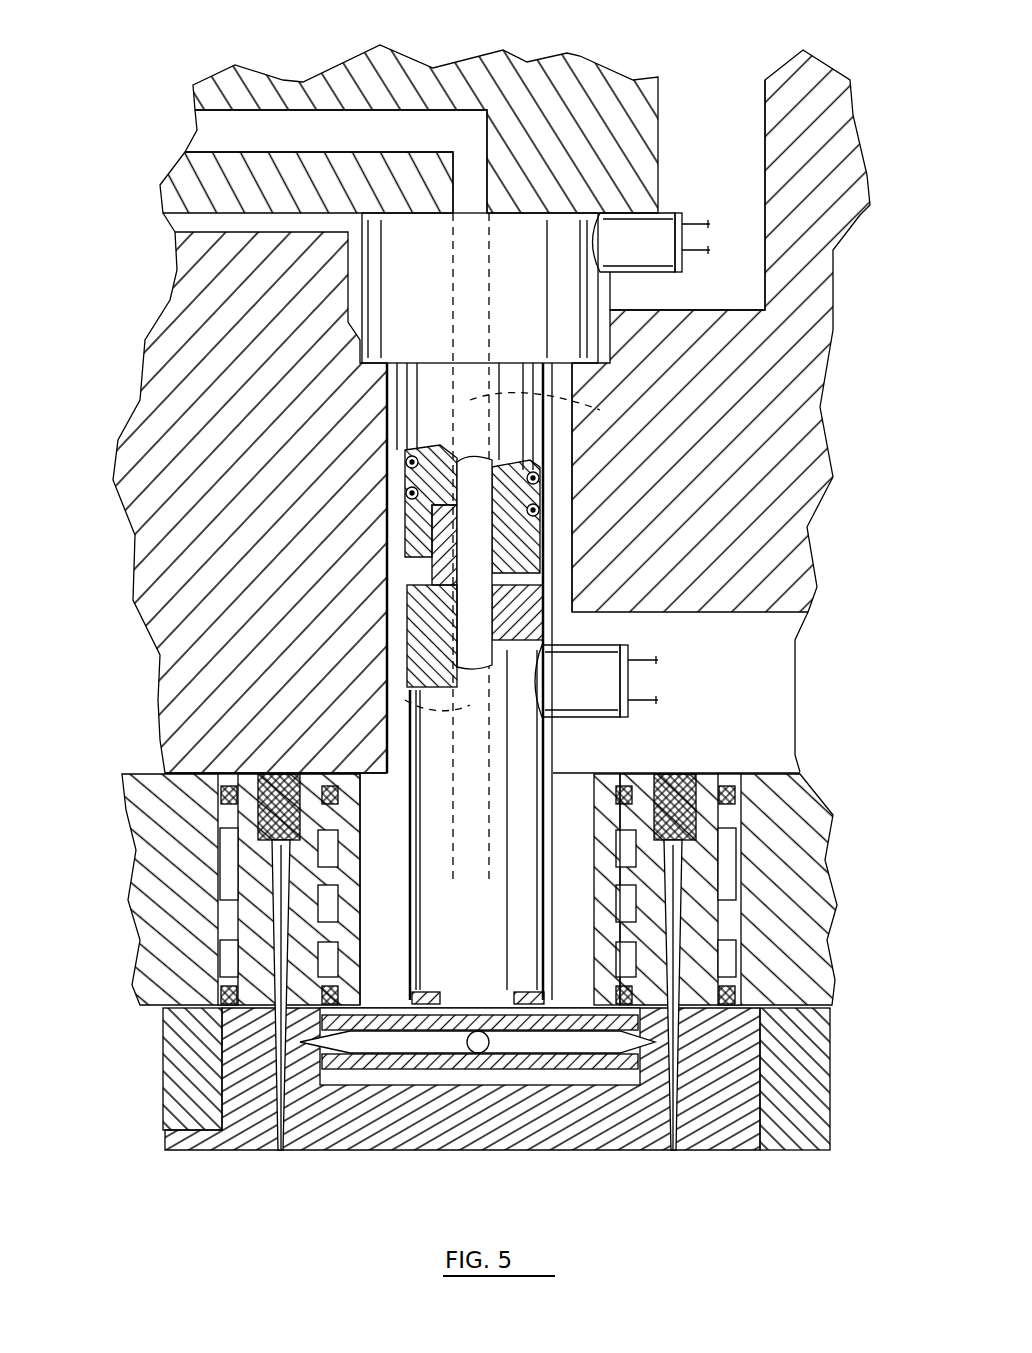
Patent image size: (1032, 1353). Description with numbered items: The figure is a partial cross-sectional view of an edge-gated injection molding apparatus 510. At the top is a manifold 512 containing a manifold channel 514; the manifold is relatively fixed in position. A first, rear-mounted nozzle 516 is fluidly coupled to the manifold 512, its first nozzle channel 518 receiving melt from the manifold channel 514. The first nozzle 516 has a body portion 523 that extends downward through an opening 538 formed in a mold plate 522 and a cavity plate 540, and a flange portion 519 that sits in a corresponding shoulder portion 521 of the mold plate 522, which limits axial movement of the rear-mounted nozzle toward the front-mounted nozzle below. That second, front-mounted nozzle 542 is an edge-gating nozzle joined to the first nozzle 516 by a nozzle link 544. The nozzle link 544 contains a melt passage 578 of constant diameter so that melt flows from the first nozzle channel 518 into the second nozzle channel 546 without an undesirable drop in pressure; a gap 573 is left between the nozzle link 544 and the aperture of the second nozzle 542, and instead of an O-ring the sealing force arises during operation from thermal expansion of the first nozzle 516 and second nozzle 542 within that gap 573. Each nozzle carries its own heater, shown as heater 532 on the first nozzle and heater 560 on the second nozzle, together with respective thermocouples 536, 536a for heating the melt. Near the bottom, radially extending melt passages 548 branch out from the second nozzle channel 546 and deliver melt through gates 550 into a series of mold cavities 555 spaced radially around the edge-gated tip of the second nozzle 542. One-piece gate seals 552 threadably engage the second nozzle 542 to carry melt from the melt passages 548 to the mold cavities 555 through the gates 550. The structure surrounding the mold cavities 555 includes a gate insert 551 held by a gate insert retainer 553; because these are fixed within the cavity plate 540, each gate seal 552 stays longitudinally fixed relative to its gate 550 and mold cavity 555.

The edge-gated injection molding apparatus 510 is at (118, 257).
The manifold 512 is at (545, 100).
The manifold channel 514 is at (385, 125).
The first nozzle 516 is at (386, 415).
The first nozzle channel 518 is at (563, 406).
The flange portion 519 is at (600, 340).
The shoulder portion 521 is at (586, 380).
The mold plate 522 is at (770, 422).
The body portion 523 is at (405, 490).
The heater 532 is at (545, 495).
The thermocouple 536 is at (545, 430).
The thermocouple 536a is at (545, 900).
The opening 538 is at (395, 745).
The cavity plate 540 is at (140, 870).
The second nozzle 542 is at (400, 865).
The nozzle link 544 is at (440, 575).
The second nozzle channel 546 is at (410, 700).
The melt passages 548 is at (440, 1062).
The gates 550 is at (282, 1140).
The gate insert 551 is at (222, 1045).
The gate seals 552 is at (400, 1082).
The gate insert retainer 553 is at (182, 1100).
The mold cavities 555 is at (222, 970).
The heater 560 is at (590, 850).
The gap 573 is at (545, 650).
The melt passage 578 is at (455, 610).